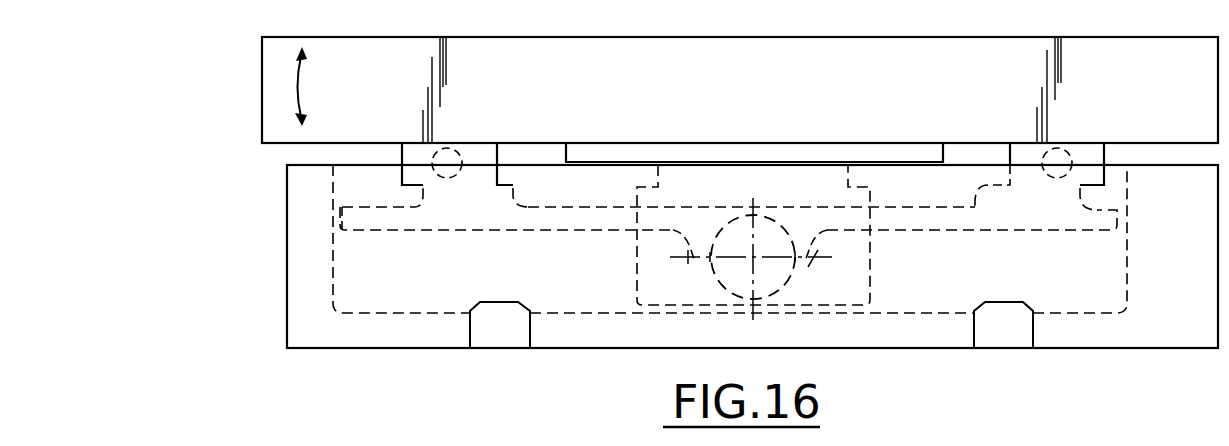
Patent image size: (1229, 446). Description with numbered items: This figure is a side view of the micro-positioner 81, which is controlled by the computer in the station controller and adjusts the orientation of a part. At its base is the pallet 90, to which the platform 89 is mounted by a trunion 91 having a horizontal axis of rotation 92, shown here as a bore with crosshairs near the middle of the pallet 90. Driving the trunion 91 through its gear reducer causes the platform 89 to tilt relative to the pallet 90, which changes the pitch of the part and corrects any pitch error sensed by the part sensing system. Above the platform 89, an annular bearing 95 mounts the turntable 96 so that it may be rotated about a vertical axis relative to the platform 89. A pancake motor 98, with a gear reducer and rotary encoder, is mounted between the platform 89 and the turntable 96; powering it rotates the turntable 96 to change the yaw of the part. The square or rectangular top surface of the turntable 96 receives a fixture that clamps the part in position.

The micro-positioner 81 is at (226, 151).
The platform 89 is at (398, 226).
The pallet 90 is at (296, 247).
The trunion 91 is at (790, 270).
The horizontal axis of rotation 92 is at (753, 257).
The annular bearing 95 is at (451, 148).
The turntable 96 is at (1089, 37).
The pancake motor 98 is at (800, 143).